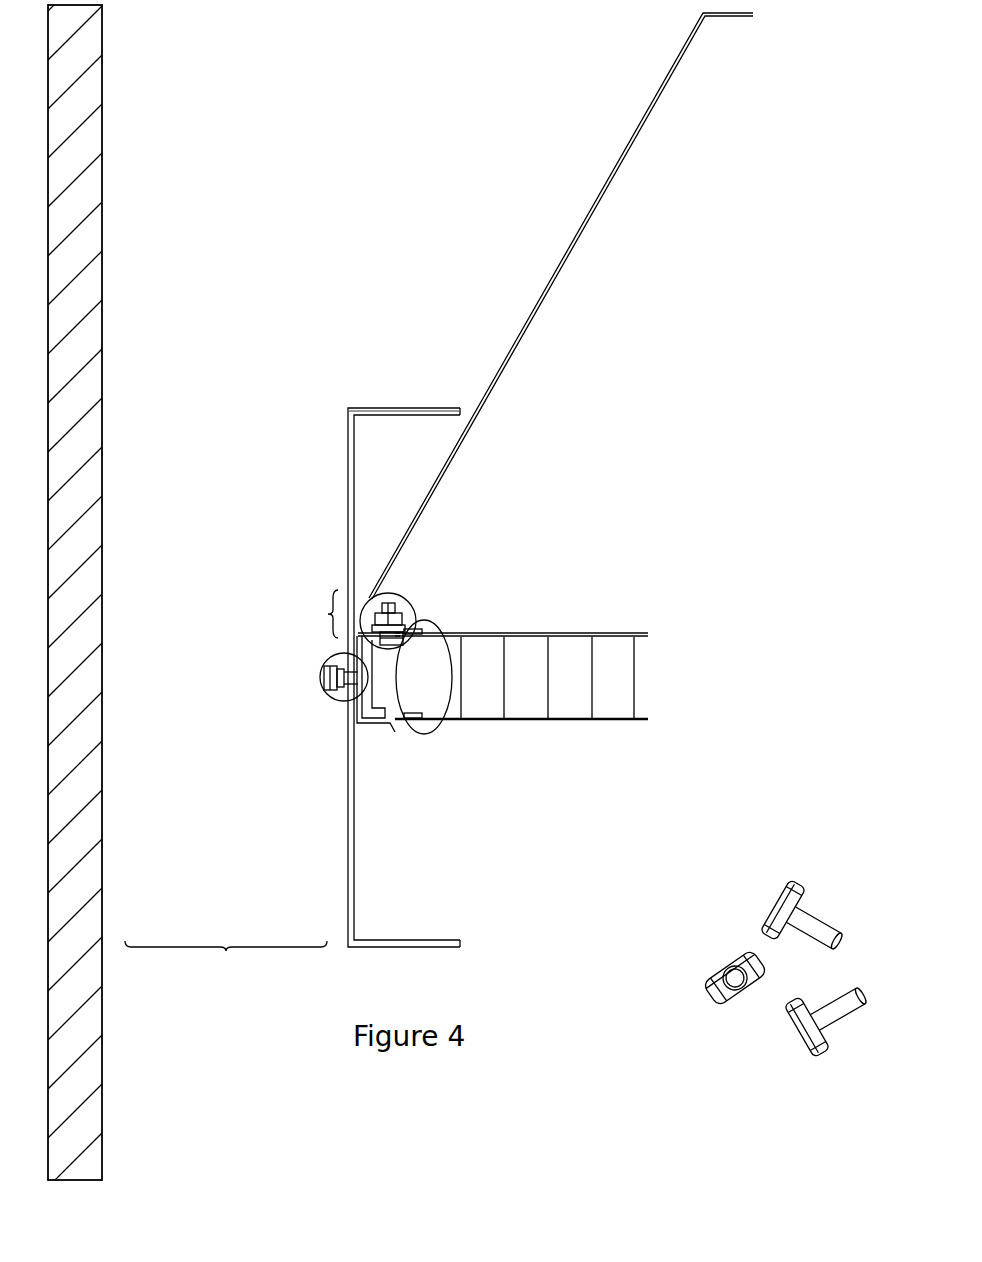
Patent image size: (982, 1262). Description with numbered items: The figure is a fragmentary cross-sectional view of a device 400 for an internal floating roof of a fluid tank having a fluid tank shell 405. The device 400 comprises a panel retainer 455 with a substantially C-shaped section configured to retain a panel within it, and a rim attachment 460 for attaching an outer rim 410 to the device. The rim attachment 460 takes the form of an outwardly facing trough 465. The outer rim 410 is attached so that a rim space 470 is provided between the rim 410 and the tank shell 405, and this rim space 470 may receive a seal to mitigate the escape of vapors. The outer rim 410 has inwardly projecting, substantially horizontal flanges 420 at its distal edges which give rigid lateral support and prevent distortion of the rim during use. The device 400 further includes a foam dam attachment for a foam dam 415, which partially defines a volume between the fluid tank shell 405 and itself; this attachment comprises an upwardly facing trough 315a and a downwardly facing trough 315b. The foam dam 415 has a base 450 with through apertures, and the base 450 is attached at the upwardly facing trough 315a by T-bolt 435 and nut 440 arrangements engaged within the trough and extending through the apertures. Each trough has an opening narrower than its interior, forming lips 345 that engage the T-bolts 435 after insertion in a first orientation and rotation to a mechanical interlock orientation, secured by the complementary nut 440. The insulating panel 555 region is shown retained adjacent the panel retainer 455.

The device 400 is at (668, 332).
The fluid tank shell 405 is at (103, 349).
The outer rim 410 is at (361, 635).
The foam dam 415 is at (623, 148).
The flanges 420 is at (404, 408).
The T-bolt 435 is at (398, 592).
The nut 440 is at (412, 618).
The base 450 is at (311, 614).
The panel retainer 455 is at (450, 675).
The rim attachment 460 is at (322, 692).
The outwardly facing trough 465 is at (371, 600).
The rim space 470 is at (226, 963).
The upwardly facing trough 315a is at (410, 630).
The downwardly facing trough 315b is at (393, 728).
The lips 345 is at (380, 726).
The insulation panel 555 is at (521, 676).